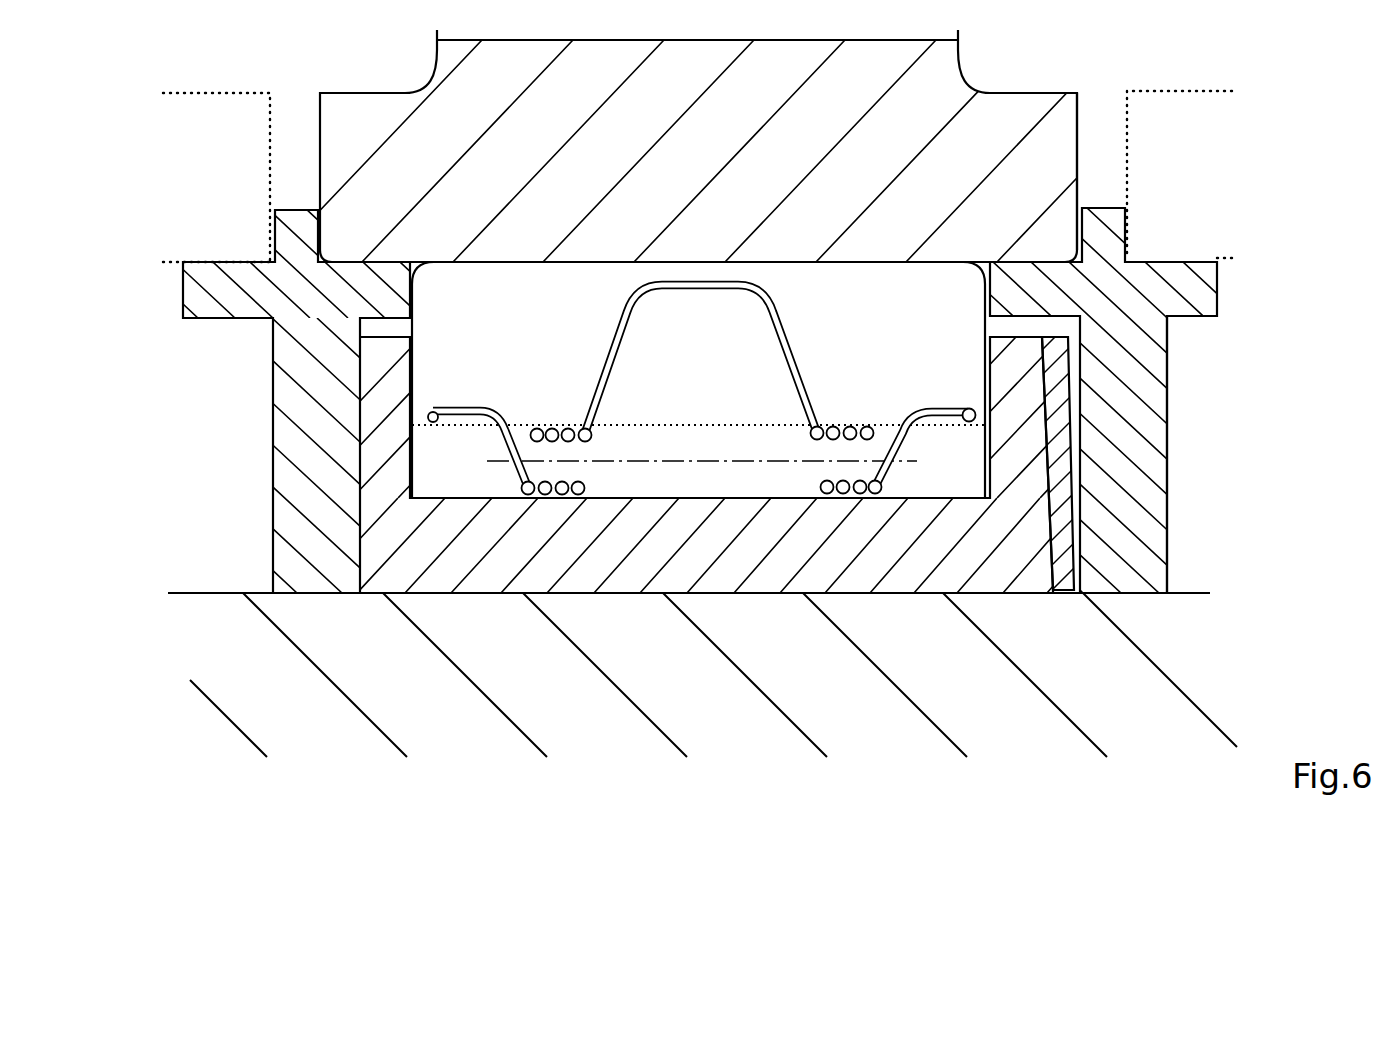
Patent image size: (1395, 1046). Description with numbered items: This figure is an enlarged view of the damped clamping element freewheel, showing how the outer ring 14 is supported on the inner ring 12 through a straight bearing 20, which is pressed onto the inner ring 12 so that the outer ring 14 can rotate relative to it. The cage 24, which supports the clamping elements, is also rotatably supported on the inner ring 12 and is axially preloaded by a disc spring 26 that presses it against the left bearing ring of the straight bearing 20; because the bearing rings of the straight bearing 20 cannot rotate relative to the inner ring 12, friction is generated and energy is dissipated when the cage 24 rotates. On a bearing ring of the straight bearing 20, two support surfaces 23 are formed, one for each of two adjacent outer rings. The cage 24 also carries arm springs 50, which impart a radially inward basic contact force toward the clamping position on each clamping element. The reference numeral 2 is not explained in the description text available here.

The forming tool 2 is at (417, 268).
The inner ring 12 is at (1215, 622).
The outer ring 14 is at (936, 68).
The straight bearing 20 is at (1142, 278).
The support surfaces 23 is at (1040, 262).
The cage 24 is at (757, 543).
The disc spring 26 is at (1063, 548).
The arm springs 50 is at (635, 302).